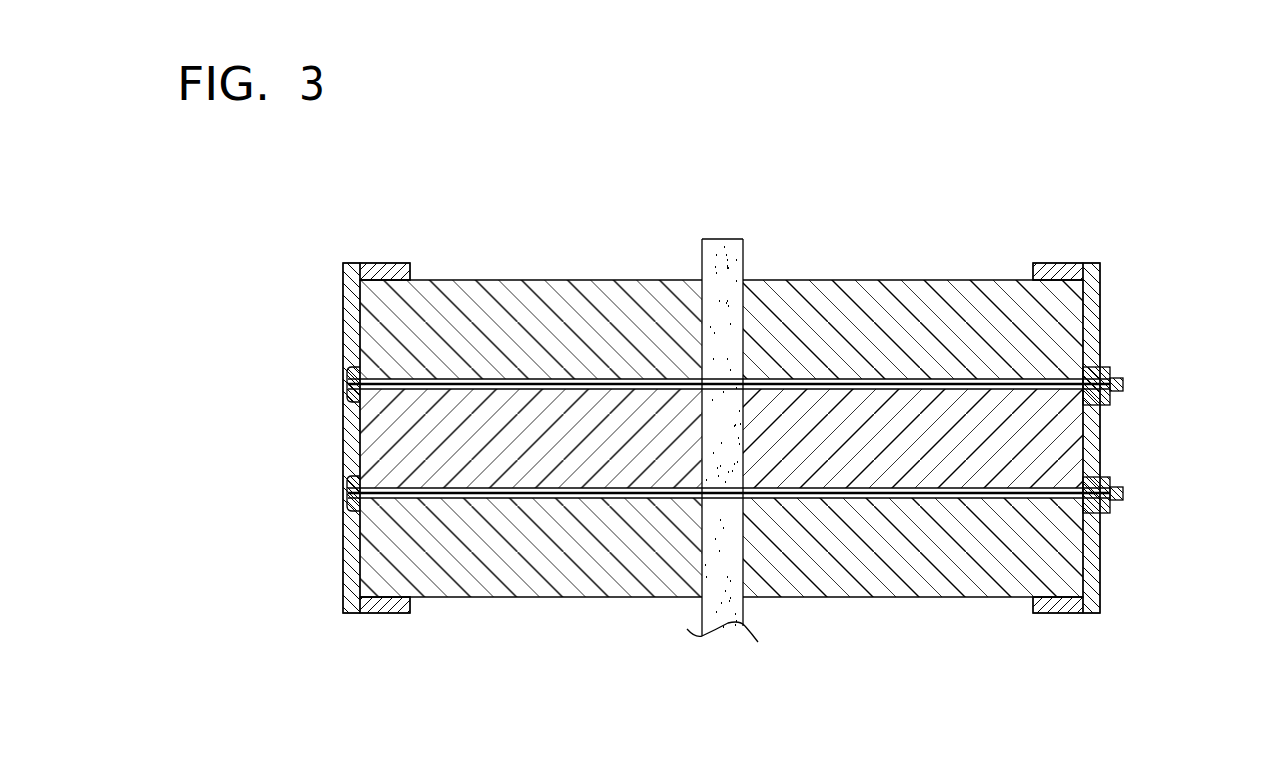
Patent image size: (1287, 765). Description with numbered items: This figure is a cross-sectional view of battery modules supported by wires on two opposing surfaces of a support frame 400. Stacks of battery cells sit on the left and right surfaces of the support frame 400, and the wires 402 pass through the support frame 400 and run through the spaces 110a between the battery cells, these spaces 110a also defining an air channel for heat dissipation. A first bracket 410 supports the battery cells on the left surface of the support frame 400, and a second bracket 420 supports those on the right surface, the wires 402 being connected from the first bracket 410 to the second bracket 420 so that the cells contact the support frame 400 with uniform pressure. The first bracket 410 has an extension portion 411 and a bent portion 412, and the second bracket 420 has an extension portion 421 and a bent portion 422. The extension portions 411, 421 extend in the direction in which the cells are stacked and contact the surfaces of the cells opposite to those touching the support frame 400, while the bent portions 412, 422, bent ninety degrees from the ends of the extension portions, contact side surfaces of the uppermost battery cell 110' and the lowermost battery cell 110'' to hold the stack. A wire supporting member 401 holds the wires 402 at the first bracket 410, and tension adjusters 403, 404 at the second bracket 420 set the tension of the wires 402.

The uppermost battery cell 110' is at (721, 269).
The lowermost battery cell 110'' is at (721, 589).
The spaces between the battery cells 110a is at (890, 499).
The support frame 400 is at (722, 248).
The wire supporting member 401 is at (353, 490).
The wires 402 is at (393, 497).
The tension adjuster 403 is at (1125, 494).
The tension adjuster 404 is at (1110, 480).
The first bracket 410 is at (250, 265).
The extension portion 411 is at (345, 415).
The bent portion 412 is at (350, 272).
The second bracket 420 is at (1223, 265).
The extension portion 421 is at (1100, 428).
The bent portion 422 is at (1070, 274).